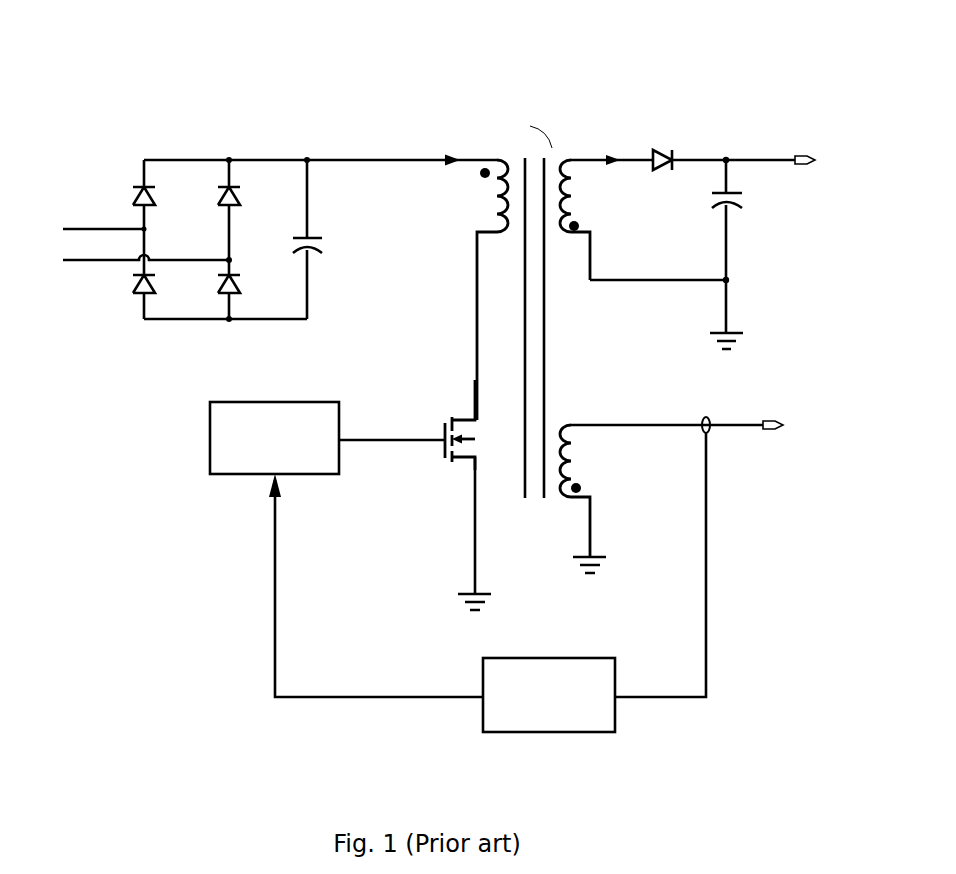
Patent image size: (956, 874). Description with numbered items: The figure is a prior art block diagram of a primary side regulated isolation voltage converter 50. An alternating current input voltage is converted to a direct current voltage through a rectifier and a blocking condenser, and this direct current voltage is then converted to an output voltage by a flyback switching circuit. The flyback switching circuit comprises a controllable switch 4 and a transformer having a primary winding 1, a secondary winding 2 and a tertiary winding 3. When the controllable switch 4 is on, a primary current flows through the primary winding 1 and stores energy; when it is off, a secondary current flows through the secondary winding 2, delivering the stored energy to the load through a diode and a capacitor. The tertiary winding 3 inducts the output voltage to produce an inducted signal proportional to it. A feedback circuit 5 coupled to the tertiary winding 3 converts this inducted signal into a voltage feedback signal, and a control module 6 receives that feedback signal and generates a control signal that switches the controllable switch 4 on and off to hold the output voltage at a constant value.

The primary side regulated isolation voltage converter 50 is at (715, 98).
The primary winding 1 is at (485, 225).
The secondary winding 2 is at (588, 225).
The tertiary winding 3 is at (592, 424).
The controllable switch 4 is at (451, 416).
The feedback circuit 5 is at (553, 657).
The control module 6 is at (290, 476).